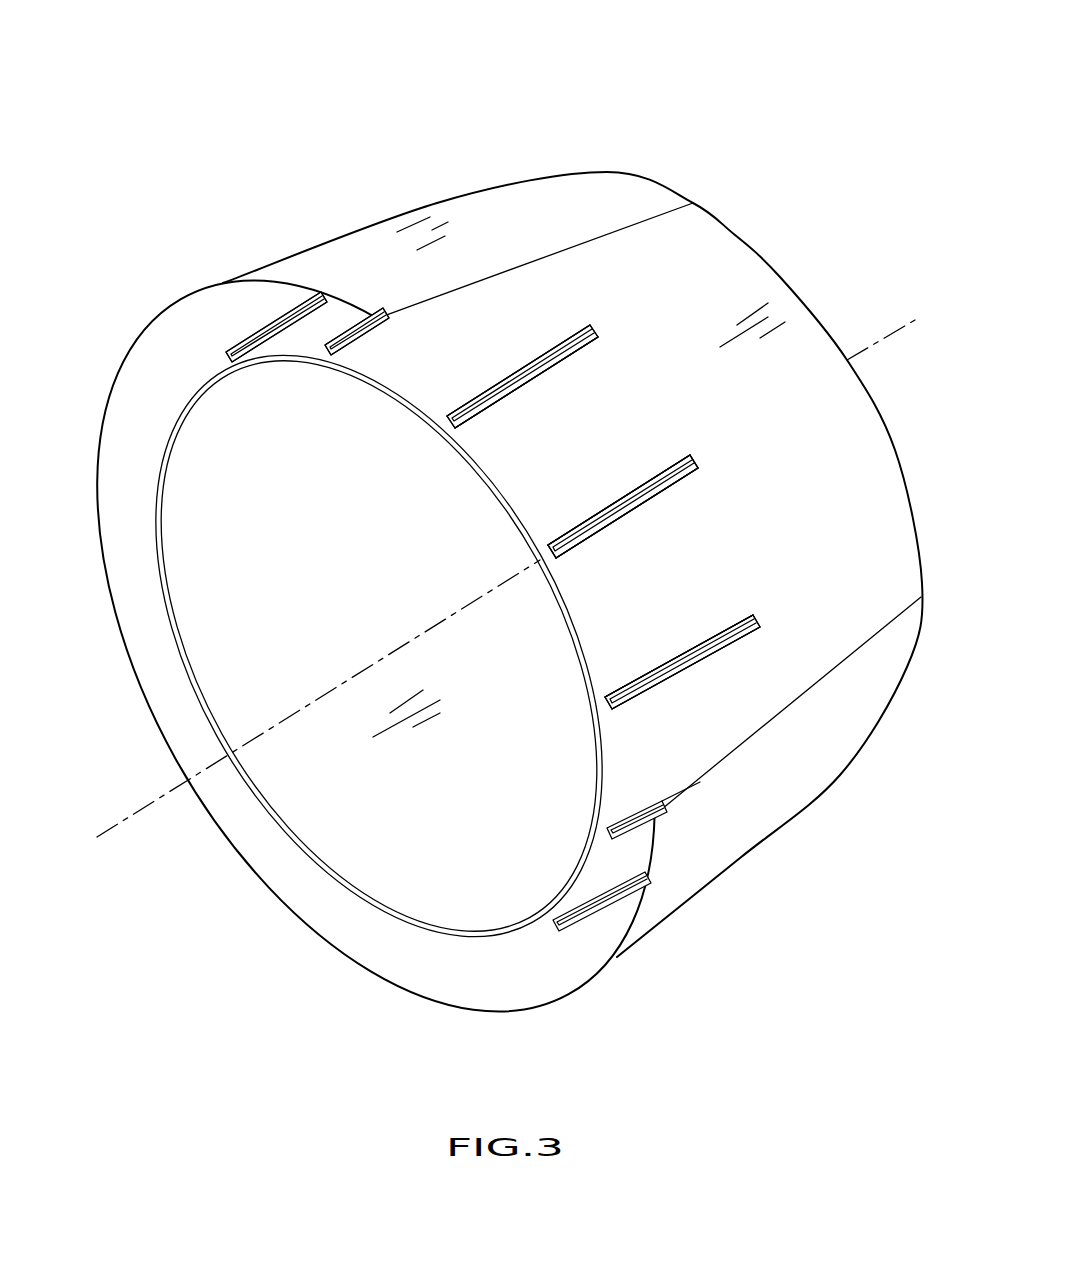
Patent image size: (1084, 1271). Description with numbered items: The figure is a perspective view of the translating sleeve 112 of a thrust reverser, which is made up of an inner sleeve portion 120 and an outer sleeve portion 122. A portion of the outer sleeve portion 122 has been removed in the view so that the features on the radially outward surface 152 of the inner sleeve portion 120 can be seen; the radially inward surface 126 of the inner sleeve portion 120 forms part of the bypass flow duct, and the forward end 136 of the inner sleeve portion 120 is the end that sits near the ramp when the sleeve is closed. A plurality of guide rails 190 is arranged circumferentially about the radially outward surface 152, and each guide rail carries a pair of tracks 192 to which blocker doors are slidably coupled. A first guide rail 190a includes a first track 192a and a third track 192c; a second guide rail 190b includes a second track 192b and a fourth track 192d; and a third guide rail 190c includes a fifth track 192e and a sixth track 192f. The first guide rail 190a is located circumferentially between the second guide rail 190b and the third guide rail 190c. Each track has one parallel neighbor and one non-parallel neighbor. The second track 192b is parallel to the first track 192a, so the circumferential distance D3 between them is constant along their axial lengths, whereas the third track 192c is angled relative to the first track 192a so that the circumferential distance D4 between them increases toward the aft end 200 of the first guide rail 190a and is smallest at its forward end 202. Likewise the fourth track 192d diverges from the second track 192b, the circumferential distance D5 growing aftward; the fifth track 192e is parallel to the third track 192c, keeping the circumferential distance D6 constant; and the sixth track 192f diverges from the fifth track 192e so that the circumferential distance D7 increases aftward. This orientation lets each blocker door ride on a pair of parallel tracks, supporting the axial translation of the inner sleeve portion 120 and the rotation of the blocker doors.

The translating sleeve 112 is at (273, 132).
The inner sleeve portion 120 is at (720, 240).
The outer sleeve portion 122 is at (255, 272).
The radially inward surface 126 is at (279, 594).
The forward end 136 is at (397, 400).
The radially outward surface 152 is at (819, 472).
The guide rails 190 is at (300, 290).
The first guide rail 190a is at (706, 447).
The second guide rail 190b is at (571, 318).
The third guide rail 190c is at (763, 612).
The tracks 192 is at (358, 324).
The first track 192a is at (683, 453).
The second track 192b is at (527, 380).
The third track 192c is at (598, 530).
The fourth track 192d is at (492, 388).
The fifth track 192e is at (657, 663).
The sixth track 192f is at (637, 693).
The aft end 200 is at (690, 460).
The forward end 202 is at (548, 540).
The circumferential distance D3 is at (642, 484).
The circumferential distance D4 is at (618, 517).
The circumferential distance D5 is at (577, 350).
The circumferential distance D6 is at (720, 628).
The circumferential distance D7 is at (717, 659).